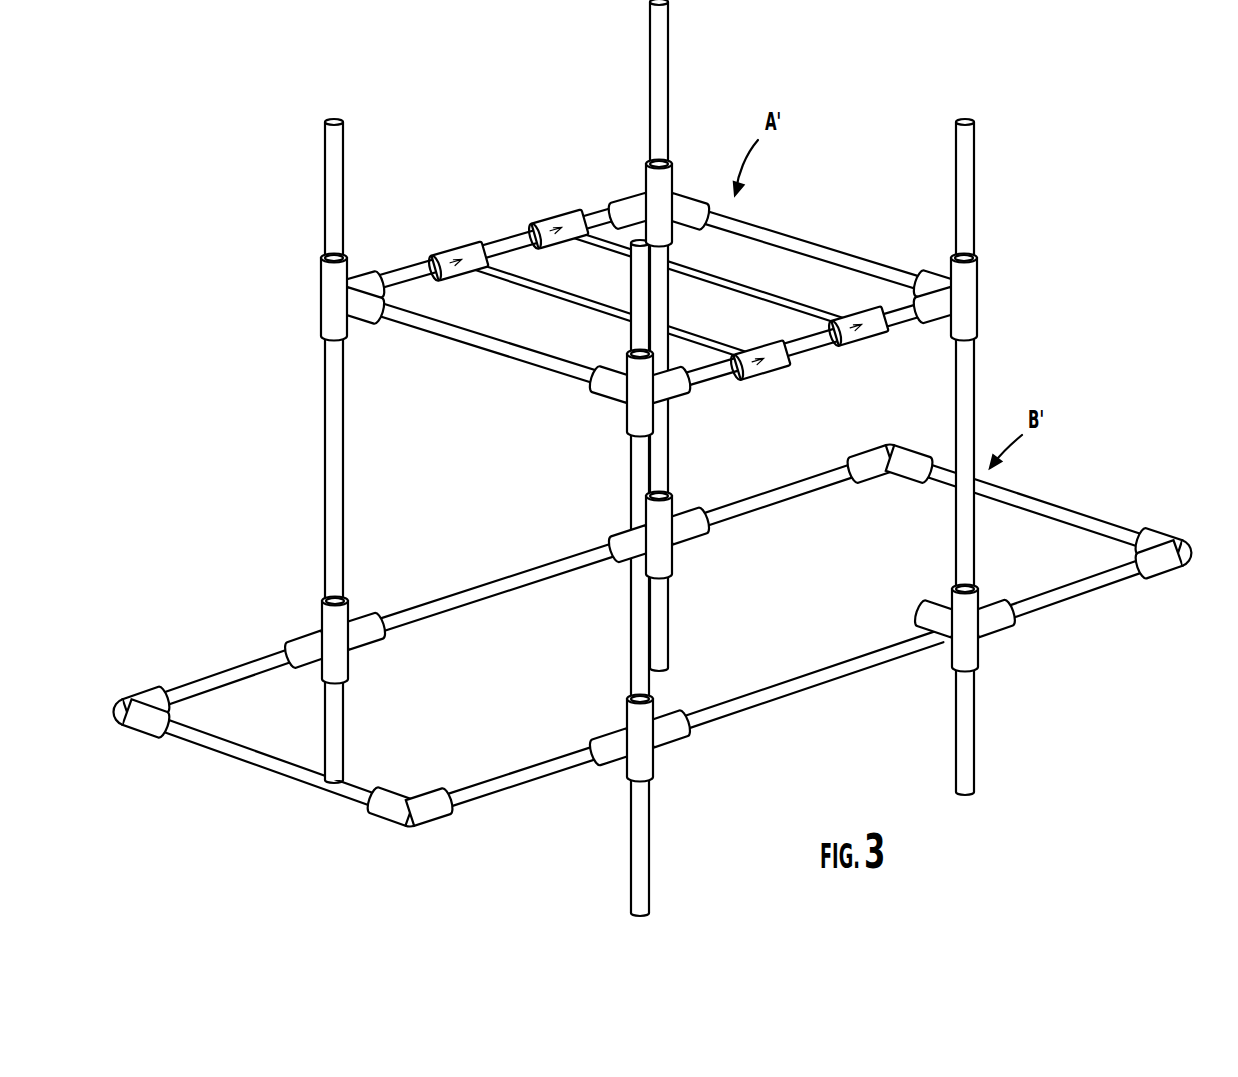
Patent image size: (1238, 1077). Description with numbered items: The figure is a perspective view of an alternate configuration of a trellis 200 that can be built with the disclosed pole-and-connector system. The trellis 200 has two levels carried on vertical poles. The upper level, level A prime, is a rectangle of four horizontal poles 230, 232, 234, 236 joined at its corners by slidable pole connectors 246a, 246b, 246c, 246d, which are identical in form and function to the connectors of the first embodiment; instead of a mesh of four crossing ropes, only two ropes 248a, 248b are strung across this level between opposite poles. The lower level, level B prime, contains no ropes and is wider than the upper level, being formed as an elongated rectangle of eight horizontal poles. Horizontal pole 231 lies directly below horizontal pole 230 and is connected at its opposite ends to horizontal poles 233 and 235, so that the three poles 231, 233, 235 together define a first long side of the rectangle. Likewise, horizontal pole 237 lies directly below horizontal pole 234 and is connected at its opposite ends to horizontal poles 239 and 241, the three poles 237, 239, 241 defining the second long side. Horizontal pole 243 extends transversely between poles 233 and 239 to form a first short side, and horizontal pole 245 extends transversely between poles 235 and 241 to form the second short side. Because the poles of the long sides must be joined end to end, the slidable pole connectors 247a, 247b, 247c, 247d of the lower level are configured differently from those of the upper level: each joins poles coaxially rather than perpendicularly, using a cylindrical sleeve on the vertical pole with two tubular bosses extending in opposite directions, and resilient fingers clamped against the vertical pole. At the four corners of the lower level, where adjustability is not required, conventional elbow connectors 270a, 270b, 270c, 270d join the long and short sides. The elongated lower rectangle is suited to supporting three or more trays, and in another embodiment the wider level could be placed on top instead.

The trellis 200 is at (250, 336).
The horizontal pole 230 is at (505, 240).
The horizontal pole 231 is at (497, 588).
The horizontal pole 232 is at (805, 240).
The horizontal pole 233 is at (758, 490).
The horizontal pole 234 is at (808, 345).
The horizontal pole 235 is at (246, 670).
The horizontal pole 236 is at (470, 342).
The horizontal pole 237 is at (820, 690).
The horizontal pole 239 is at (1087, 592).
The horizontal pole 241 is at (522, 788).
The horizontal pole 243 is at (1020, 494).
The horizontal pole 245 is at (256, 762).
The slidable pole connector 246a is at (340, 292).
The slidable pole connector 246b is at (672, 205).
The slidable pole connector 246c is at (973, 298).
The slidable pole connector 246d is at (625, 410).
The slidable pole connector 247a is at (350, 655).
The slidable pole connector 247b is at (668, 552).
The slidable pole connector 247c is at (988, 630).
The slidable pole connector 247d is at (652, 752).
The rope 248a is at (555, 290).
The rope 248b is at (720, 285).
The conventional elbow connector 270a is at (132, 697).
The conventional elbow connector 270b is at (890, 446).
The conventional elbow connector 270c is at (1180, 530).
The conventional elbow connector 270d is at (385, 820).